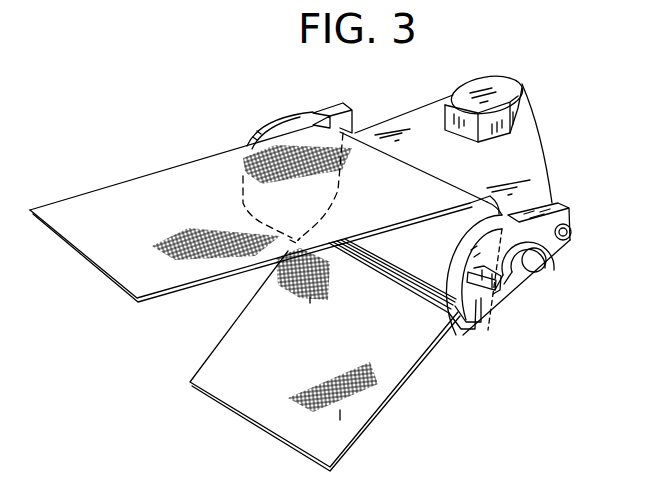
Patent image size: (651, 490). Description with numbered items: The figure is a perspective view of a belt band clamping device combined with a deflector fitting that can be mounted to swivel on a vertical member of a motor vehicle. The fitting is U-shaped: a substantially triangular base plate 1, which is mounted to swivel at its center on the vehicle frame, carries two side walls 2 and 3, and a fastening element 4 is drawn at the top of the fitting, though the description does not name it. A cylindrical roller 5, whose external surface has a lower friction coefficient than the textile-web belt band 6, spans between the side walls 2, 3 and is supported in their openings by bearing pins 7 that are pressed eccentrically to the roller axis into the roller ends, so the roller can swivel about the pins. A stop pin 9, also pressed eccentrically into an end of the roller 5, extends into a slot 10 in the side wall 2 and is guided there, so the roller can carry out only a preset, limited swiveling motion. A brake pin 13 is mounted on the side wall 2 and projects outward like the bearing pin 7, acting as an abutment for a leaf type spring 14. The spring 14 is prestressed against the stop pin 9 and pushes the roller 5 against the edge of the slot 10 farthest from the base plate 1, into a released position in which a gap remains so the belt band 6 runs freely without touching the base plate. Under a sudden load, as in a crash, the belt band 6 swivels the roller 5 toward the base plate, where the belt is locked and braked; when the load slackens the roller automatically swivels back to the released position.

The base plate 1 is at (412, 116).
The side wall 2 is at (518, 295).
The side wall 3 is at (321, 118).
The hexagonal nut 4 is at (505, 86).
The cylindrical roller 5 is at (443, 273).
The belt band 6 is at (156, 278).
The bearing pin 7 is at (535, 268).
The stop pin 9 is at (483, 300).
The slot 10 is at (477, 298).
The brake pin 13 is at (571, 234).
The leaf type spring 14 is at (493, 297).